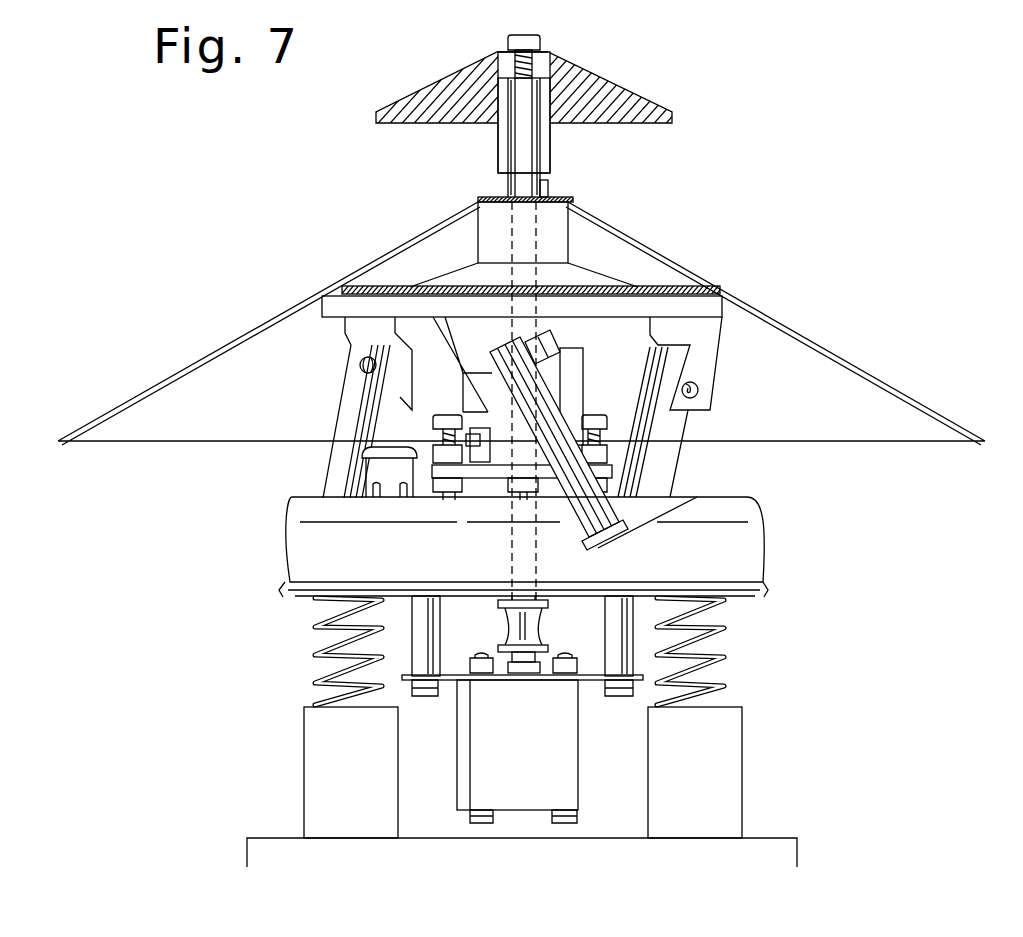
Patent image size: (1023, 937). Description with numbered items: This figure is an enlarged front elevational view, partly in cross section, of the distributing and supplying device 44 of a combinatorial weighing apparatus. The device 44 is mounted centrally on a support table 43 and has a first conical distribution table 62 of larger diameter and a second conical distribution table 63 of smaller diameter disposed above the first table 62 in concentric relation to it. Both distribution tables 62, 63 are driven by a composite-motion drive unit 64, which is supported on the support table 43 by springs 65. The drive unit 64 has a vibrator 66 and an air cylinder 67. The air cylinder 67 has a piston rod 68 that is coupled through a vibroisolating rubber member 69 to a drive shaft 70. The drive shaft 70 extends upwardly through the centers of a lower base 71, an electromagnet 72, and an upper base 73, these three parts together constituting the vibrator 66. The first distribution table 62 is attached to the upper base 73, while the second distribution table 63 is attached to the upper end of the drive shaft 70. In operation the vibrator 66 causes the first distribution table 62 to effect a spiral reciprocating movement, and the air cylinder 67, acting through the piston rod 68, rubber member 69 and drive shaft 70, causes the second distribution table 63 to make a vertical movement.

The support table 43 is at (771, 853).
The distributing and supplying device 44 is at (762, 115).
The first conical distribution table 62 is at (780, 323).
The second conical distribution table 63 is at (598, 86).
The composite-motion drive unit 64 is at (270, 567).
The springs 65 is at (335, 673).
The vibrator 66 is at (650, 284).
The air cylinder 67 is at (568, 757).
The piston rod 68 is at (547, 657).
The vibroisolating rubber member 69 is at (545, 620).
The drive shaft 70 is at (513, 553).
The lower base 71 is at (742, 510).
The electromagnet 72 is at (577, 392).
The upper base 73 is at (612, 312).